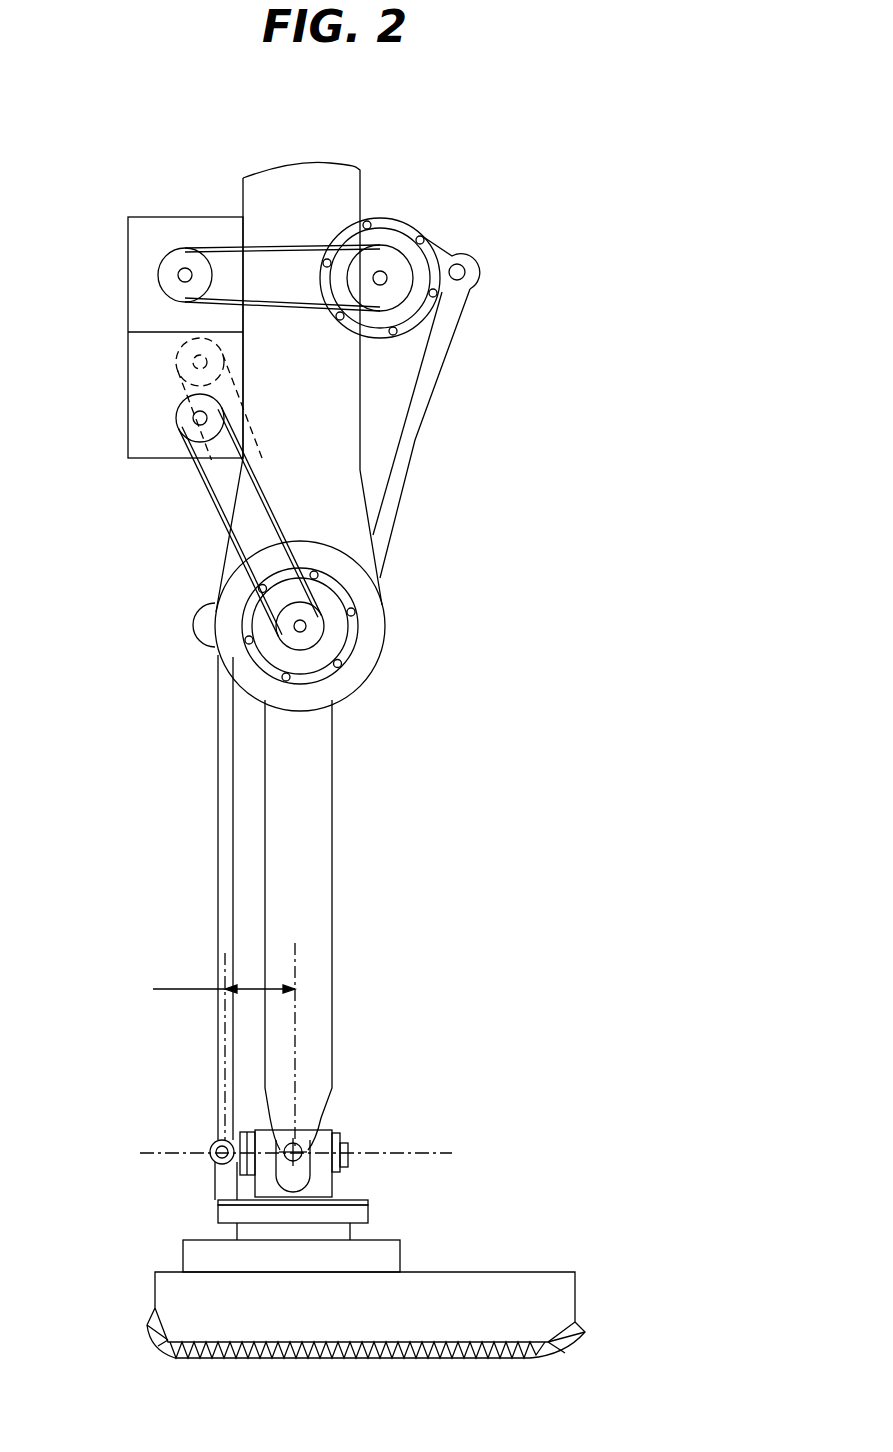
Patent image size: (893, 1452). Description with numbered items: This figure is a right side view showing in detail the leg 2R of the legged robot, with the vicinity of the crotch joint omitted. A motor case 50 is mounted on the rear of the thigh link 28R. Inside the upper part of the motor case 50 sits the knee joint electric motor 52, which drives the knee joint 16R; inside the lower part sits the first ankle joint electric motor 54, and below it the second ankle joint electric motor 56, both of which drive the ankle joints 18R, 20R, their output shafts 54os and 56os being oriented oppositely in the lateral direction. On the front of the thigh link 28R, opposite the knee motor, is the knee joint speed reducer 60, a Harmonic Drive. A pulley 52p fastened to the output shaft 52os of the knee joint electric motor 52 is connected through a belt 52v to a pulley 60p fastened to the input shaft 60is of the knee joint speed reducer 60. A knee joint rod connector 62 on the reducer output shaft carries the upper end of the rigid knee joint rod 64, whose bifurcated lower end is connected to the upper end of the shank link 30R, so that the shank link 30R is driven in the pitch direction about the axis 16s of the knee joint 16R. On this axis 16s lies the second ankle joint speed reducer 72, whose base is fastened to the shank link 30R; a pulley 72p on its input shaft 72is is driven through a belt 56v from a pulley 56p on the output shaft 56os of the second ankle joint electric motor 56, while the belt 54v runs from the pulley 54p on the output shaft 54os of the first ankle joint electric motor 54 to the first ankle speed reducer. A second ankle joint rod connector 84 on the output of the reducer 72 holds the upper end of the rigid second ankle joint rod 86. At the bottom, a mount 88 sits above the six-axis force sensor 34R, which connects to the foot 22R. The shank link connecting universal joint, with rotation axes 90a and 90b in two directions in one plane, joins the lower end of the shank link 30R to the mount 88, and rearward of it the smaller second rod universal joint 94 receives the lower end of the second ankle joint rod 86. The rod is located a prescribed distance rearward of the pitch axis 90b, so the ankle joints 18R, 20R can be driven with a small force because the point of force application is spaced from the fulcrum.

The leg 2R is at (524, 140).
The thigh link 28R is at (313, 176).
The motor case 50 is at (130, 215).
The knee joint electric motor 52 is at (116, 219).
The pulley 52p is at (165, 265).
The output shaft 52os is at (178, 277).
The belt 52v is at (222, 250).
The knee joint speed reducer 60 is at (417, 237).
The pulley 60p is at (412, 228).
The input shaft 60is is at (381, 271).
The knee joint rod connector 62 is at (478, 272).
The knee joint rod 64 is at (445, 342).
The first ankle joint electric motor 54 is at (126, 339).
The pulley 54p is at (200, 338).
The output shaft 54os is at (193, 364).
The belt 54v is at (186, 397).
The second ankle joint electric motor 56 is at (130, 465).
The pulley 56p is at (181, 436).
The output shaft 56os is at (194, 421).
The belt 56v is at (217, 513).
The second ankle joint speed reducer 72 is at (277, 643).
The pulley 72p is at (318, 643).
The input shaft 72is is at (199, 682).
The knee joint 16R is at (302, 643).
The axis 16s is at (295, 629).
The second ankle joint rod connector 84 is at (197, 614).
The shank link 30R is at (334, 811).
The second ankle joint rod 86 is at (220, 860).
The ankle joint 18R is at (391, 1113).
The ankle joint 20R is at (391, 1138).
The rotation axis 90b is at (326, 1120).
The second rod universal joint 94 is at (211, 1141).
The rotation axis 90a is at (401, 1127).
The mount 88 is at (334, 1190).
The six-axis force sensor 34R is at (368, 1214).
The foot 22R is at (557, 1300).